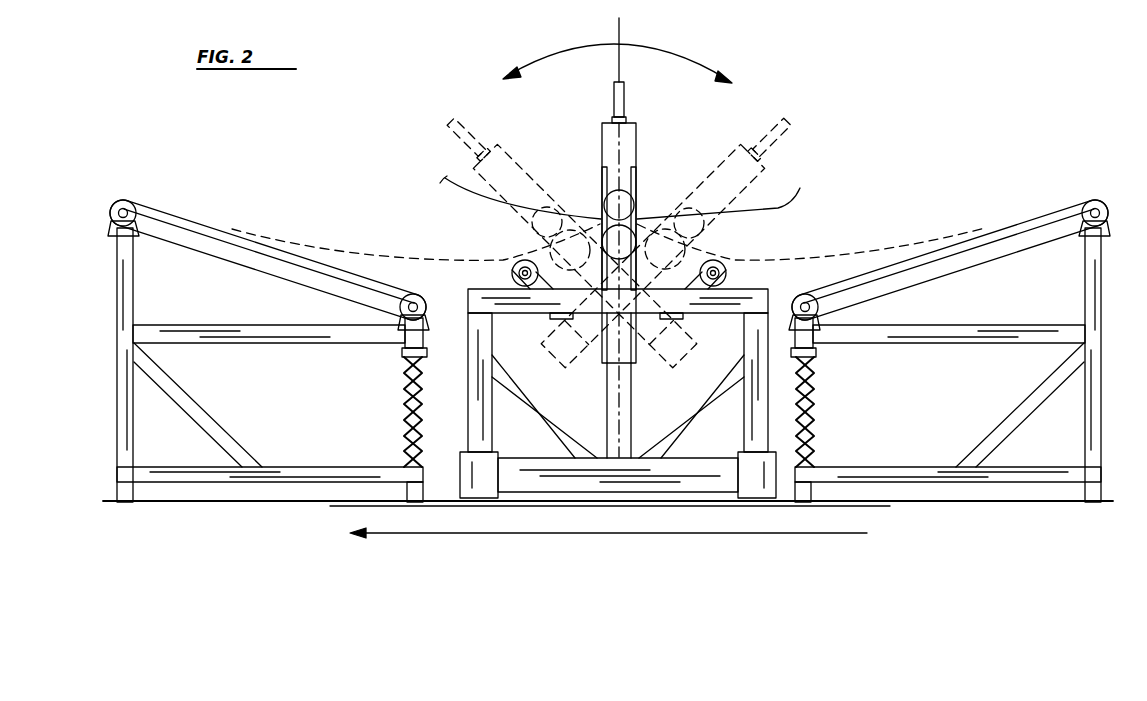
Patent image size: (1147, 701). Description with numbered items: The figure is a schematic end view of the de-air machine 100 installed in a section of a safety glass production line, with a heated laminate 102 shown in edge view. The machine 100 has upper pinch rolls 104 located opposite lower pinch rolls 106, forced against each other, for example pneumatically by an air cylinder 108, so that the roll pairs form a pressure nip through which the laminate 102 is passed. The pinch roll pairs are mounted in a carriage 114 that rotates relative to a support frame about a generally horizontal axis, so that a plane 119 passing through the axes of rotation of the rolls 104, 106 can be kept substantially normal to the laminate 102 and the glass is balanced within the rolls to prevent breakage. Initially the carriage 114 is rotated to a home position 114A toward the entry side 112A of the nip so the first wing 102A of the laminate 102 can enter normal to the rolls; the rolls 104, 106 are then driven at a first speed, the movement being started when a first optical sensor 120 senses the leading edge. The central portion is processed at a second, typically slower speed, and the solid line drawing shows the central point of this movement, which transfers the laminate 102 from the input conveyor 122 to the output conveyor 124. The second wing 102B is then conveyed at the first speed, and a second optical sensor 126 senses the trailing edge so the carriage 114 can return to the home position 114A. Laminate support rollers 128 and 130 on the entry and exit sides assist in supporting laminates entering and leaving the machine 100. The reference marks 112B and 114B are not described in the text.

The de-air machine 100 is at (774, 100).
The laminate 102 is at (330, 247).
The first wing 102A is at (218, 219).
The second wing 102B is at (1028, 214).
The upper pinch rolls 104 is at (702, 225).
The lower pinch rolls 106 is at (684, 249).
The air cylinder 108 is at (614, 101).
The entry side of the nip 112A is at (644, 202).
The web guide path B 112B is at (595, 200).
The carriage 114 is at (636, 134).
The home position 114A is at (767, 187).
The housing tilted position B 114B is at (470, 176).
The plane 119 is at (622, 31).
The first optical sensor 120 is at (636, 170).
The input conveyor 122 is at (1067, 206).
The output conveyor 124 is at (157, 203).
The second optical sensor 126 is at (603, 167).
The laminate support roller 128 is at (728, 272).
The laminate support roller 130 is at (511, 266).